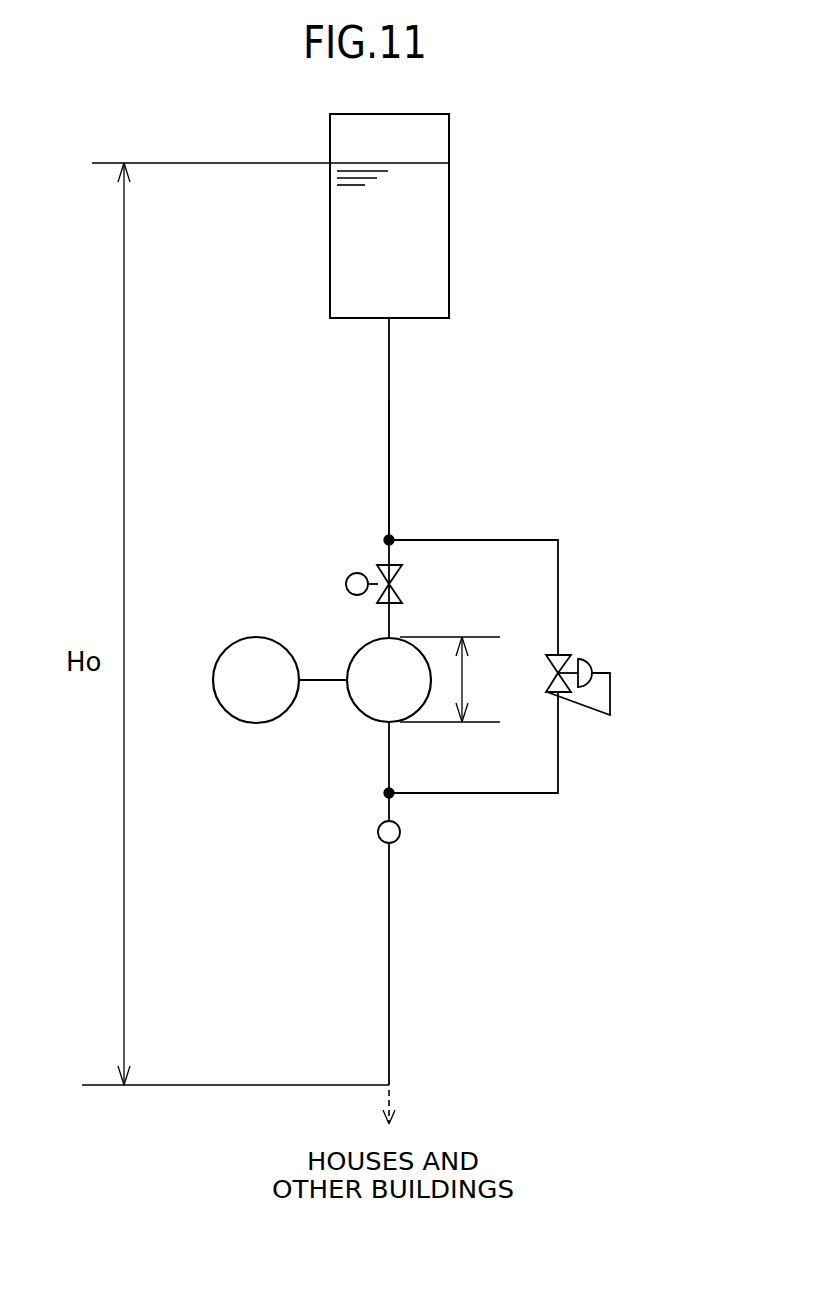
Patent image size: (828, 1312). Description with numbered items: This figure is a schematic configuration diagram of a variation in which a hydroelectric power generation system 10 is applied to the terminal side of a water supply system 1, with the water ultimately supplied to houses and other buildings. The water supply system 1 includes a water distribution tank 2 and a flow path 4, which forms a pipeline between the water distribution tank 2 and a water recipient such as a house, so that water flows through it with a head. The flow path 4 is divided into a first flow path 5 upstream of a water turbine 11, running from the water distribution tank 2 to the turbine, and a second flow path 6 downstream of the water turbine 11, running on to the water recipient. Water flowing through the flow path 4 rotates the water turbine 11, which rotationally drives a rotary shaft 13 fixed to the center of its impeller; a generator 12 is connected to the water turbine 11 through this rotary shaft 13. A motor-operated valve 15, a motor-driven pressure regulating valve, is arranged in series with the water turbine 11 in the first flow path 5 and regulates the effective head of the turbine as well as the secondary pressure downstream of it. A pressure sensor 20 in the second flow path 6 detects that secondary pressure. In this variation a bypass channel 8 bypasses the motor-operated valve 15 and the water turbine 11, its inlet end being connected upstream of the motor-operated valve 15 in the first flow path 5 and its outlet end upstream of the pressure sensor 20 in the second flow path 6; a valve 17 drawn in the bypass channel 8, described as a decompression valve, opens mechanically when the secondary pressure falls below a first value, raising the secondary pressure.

The water supply system 1 is at (470, 367).
The water distribution tank 2 is at (449, 150).
The flow path 4 is at (386, 368).
The first flow path 5 is at (388, 437).
The second flow path 6 is at (388, 915).
The bypass channel 8 is at (559, 752).
The hydroelectric power generation system 10 is at (620, 532).
The water turbine 11 is at (357, 653).
The generator 12 is at (253, 637).
The rotary shaft 13 is at (322, 682).
The motor-operated valve 15 is at (403, 576).
The flow control valve 17 is at (588, 661).
The pressure sensor 20 is at (400, 830).